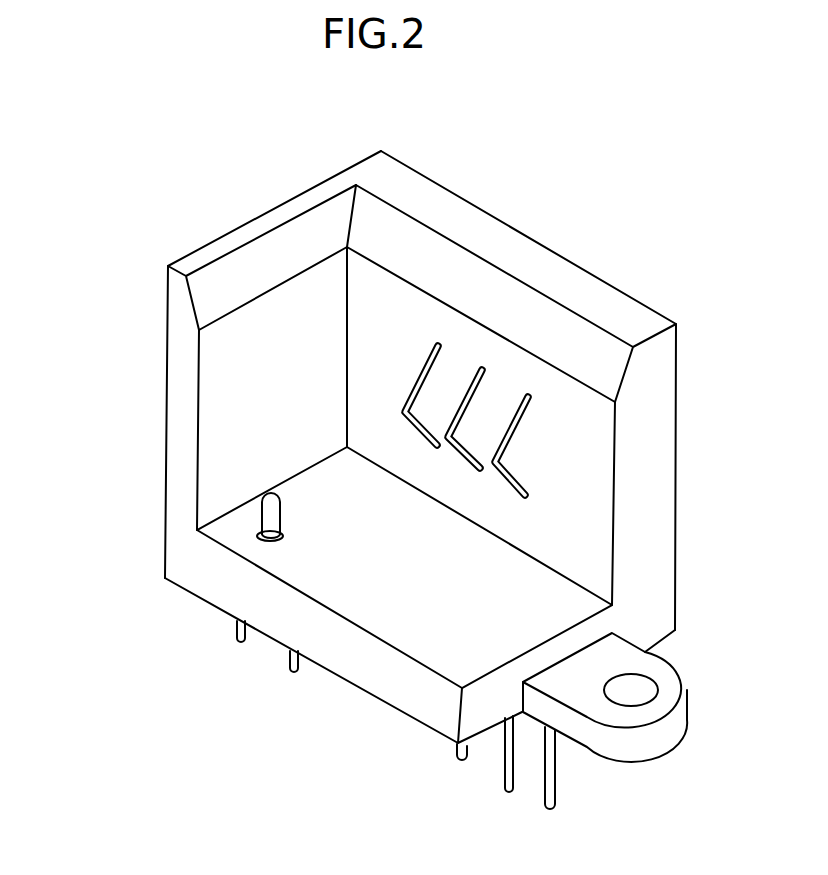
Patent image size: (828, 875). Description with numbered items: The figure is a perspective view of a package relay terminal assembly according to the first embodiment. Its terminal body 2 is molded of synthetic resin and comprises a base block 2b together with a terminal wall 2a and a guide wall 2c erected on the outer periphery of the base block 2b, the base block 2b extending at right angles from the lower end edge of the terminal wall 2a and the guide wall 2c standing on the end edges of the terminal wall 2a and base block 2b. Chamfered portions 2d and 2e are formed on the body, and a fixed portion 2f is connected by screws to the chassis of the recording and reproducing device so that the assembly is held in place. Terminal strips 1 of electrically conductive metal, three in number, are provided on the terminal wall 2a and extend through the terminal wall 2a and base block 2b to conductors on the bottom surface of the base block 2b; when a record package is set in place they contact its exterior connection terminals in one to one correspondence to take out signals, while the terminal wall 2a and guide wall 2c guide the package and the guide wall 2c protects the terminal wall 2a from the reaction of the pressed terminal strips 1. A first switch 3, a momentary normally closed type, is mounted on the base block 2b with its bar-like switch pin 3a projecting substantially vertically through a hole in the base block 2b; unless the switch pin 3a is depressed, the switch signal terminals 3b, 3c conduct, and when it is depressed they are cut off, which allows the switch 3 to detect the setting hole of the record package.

The terminal strips 1 is at (427, 448).
The terminal body 2 is at (453, 142).
The terminal wall 2a is at (460, 355).
The base block 2b is at (517, 572).
The guide wall 2c is at (327, 298).
The chamfered portion 2d is at (470, 278).
The chamfered portion 2e is at (335, 219).
The fixed portion 2f is at (613, 647).
The first switch 3 is at (101, 520).
The switch pin 3a is at (268, 518).
The switch signal terminal 3b is at (237, 628).
The switch signal terminal 3c is at (290, 667).